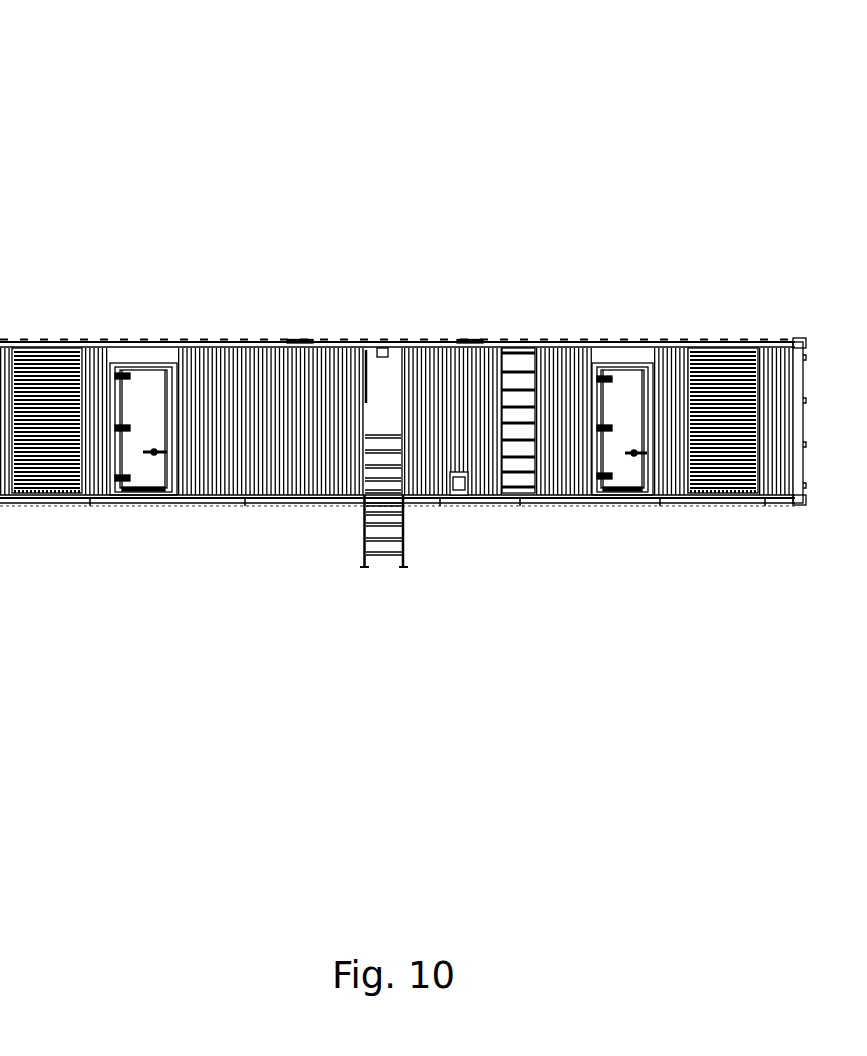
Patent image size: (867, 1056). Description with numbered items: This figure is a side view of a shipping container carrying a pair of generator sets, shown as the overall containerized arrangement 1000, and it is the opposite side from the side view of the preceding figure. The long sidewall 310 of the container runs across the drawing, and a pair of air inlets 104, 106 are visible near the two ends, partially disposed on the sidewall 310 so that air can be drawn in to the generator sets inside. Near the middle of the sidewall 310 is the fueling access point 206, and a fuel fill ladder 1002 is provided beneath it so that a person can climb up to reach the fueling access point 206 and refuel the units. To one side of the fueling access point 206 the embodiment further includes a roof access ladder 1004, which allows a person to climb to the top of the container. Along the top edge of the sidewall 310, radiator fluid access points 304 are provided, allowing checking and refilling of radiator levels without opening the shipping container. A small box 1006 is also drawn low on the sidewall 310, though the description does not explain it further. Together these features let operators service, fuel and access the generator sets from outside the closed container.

The containerized system 1000 is at (116, 79).
The air inlet 104 is at (42, 477).
The air inlet 106 is at (726, 472).
The fueling access point 206 is at (382, 347).
The radiator fluid access point 304 is at (307, 340).
The sidewall 310 is at (236, 472).
The fuel fill ladder 1002 is at (362, 550).
The roof access ladder 1004 is at (530, 363).
The electrical box 1006 is at (460, 484).